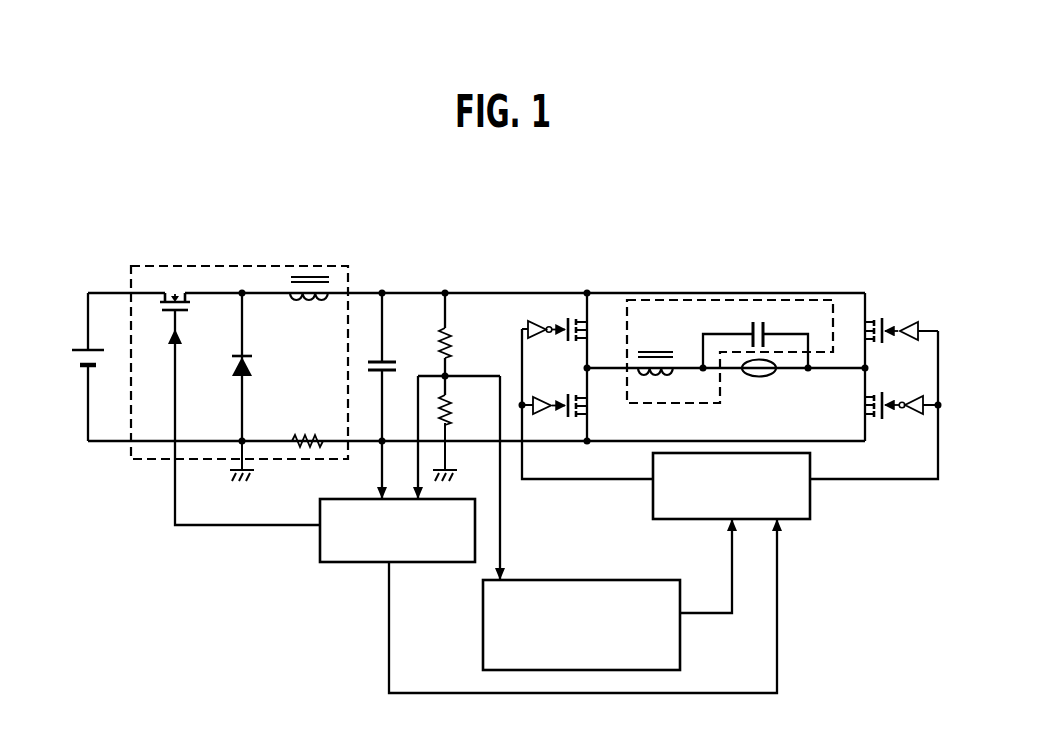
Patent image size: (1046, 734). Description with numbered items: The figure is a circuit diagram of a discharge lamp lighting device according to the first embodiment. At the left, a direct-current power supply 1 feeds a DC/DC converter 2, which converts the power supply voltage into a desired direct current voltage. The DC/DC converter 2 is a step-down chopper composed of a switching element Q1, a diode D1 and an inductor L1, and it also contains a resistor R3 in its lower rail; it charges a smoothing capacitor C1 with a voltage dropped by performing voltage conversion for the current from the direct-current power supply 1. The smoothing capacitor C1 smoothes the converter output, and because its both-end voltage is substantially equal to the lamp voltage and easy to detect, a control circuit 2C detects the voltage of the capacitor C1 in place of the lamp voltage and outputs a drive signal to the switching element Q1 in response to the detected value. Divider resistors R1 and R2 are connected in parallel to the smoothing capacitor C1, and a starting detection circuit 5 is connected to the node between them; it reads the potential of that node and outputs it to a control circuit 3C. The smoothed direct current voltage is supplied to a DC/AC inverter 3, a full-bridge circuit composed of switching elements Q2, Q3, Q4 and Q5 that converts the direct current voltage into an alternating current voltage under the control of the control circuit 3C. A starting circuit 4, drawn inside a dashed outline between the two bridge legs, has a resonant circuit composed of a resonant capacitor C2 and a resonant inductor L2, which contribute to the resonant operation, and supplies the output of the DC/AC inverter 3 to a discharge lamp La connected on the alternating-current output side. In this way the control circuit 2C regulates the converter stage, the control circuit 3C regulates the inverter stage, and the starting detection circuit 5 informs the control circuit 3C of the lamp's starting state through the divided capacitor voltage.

The direct-current power supply 1 is at (76, 368).
The DC/DC converter 2 is at (152, 462).
The control circuit 2C is at (319, 548).
The DC/AC inverter 3 is at (943, 279).
The control circuit 3C is at (810, 502).
The starting circuit 4 is at (692, 390).
The starting detection circuit 5 is at (483, 615).
The switching element Q1 is at (240, 409).
The diode D1 is at (257, 386).
The inductor L1 is at (309, 304).
The current detection resistor R3 is at (307, 426).
The smoothing capacitor C1 is at (393, 395).
The divider resistor R1 is at (461, 343).
The divider resistor R2 is at (458, 438).
The switching element Q2 is at (570, 367).
The switching element Q3 is at (569, 408).
The resonant inductor L2 is at (655, 378).
The discharge lamp La is at (759, 385).
The resonant capacitor C2 is at (784, 339).
The switching element Q4 is at (901, 318).
The switching element Q5 is at (903, 396).